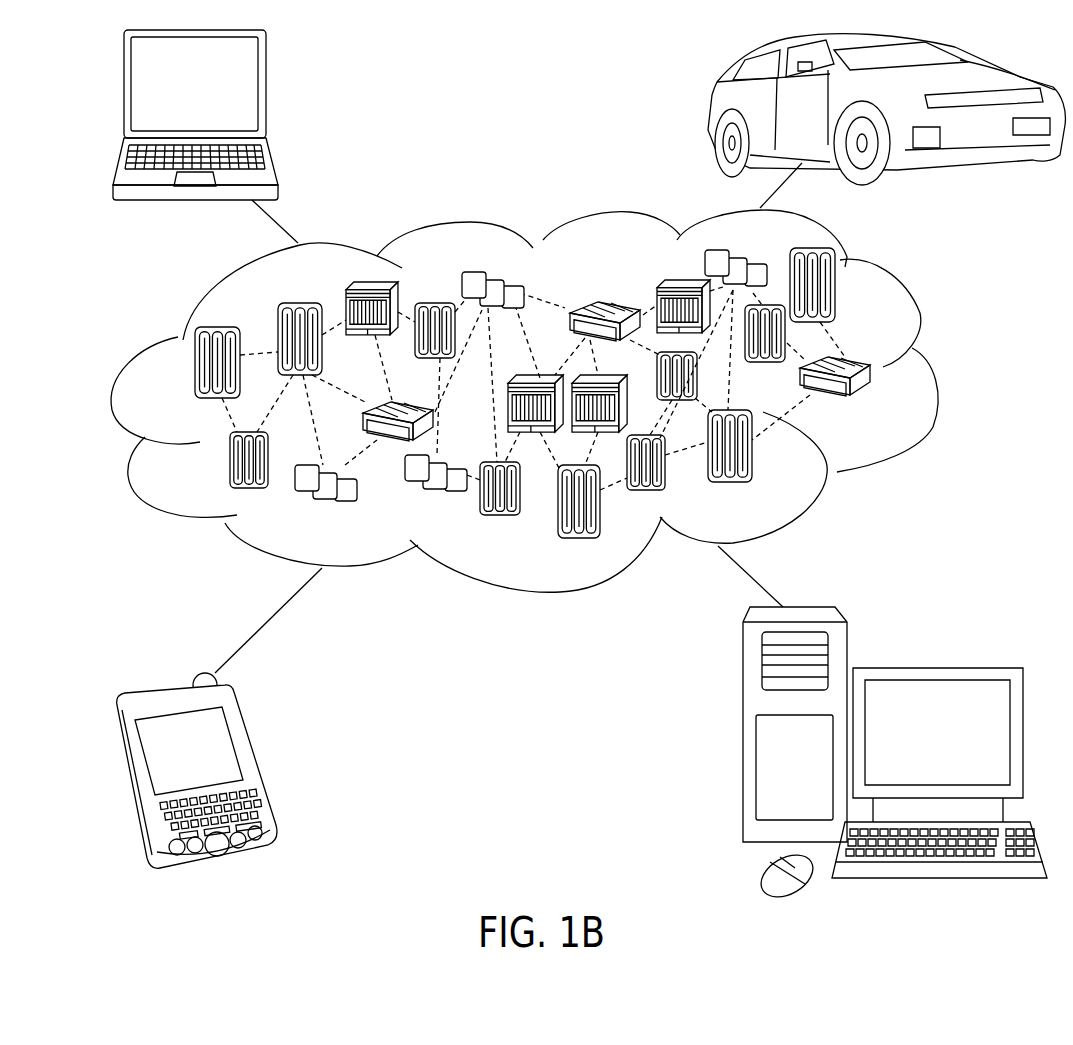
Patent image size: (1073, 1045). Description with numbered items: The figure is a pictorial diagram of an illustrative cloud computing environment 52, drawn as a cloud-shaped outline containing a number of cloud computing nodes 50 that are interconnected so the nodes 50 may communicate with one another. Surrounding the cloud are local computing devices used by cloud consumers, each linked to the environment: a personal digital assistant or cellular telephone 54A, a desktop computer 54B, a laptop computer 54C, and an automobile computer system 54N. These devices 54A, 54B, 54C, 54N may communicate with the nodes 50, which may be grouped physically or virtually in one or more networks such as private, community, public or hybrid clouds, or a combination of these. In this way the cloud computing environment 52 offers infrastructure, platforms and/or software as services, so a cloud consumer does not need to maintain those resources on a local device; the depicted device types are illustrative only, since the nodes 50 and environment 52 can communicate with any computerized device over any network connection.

The cloud computing nodes 50 is at (940, 276).
The cloud computing environment 52 is at (935, 367).
The personal digital assistant (PDA) or cellular telephone 54A is at (261, 757).
The desktop computer 54B is at (935, 668).
The laptop computer 54C is at (266, 94).
The automobile computer system 54N is at (710, 110).